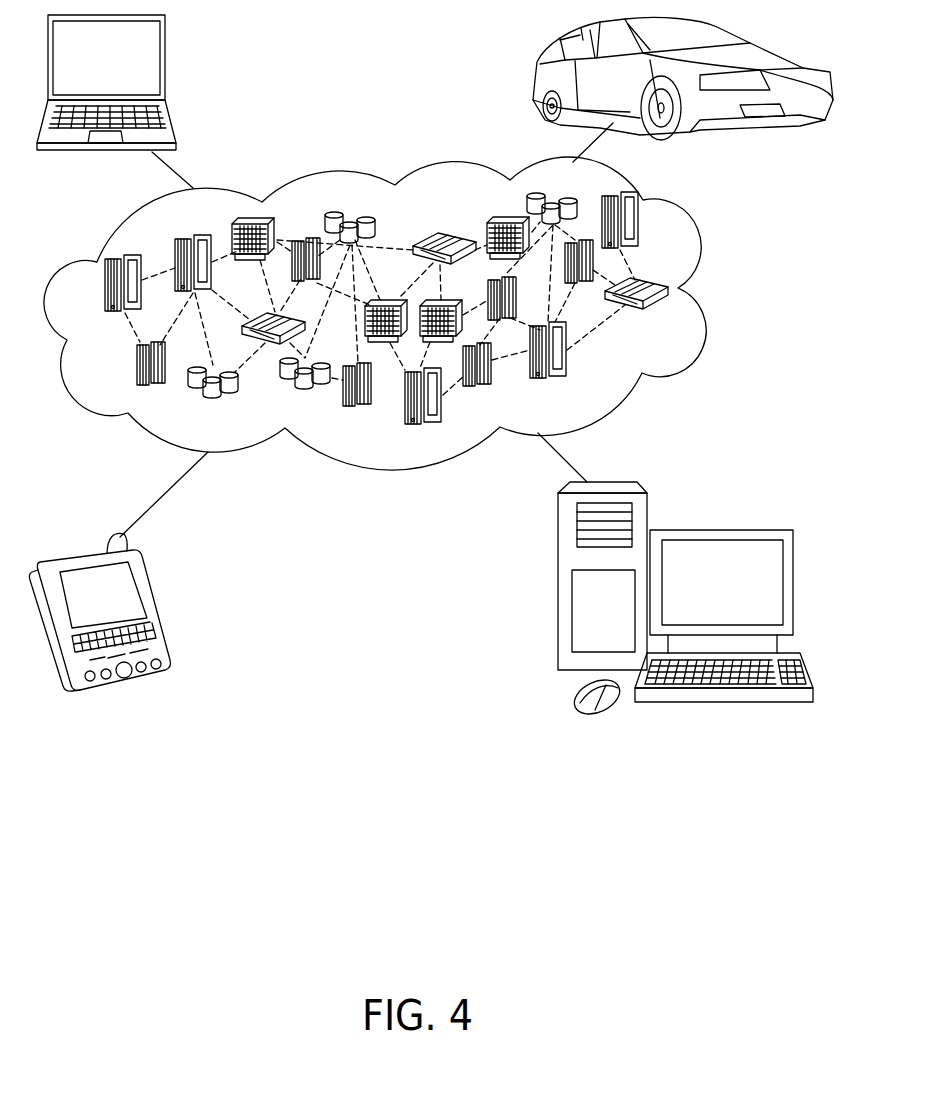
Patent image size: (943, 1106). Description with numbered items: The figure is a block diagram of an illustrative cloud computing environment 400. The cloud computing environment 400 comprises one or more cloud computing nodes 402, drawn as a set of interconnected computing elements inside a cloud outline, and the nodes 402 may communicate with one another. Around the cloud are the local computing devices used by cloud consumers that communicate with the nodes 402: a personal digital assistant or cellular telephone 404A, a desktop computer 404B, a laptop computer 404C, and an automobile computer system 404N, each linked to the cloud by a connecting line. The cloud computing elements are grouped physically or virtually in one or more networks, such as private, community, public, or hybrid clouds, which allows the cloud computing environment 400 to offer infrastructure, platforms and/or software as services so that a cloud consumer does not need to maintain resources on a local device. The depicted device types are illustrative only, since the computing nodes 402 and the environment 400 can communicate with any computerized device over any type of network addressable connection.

The cloud computing environment 400 is at (707, 273).
The cloud computing node 402 is at (672, 318).
The personal digital assistant or cellular telephone 404A is at (147, 582).
The desktop computer 404B is at (710, 530).
The laptop computer 404C is at (165, 47).
The automobile computer system 404N is at (537, 82).